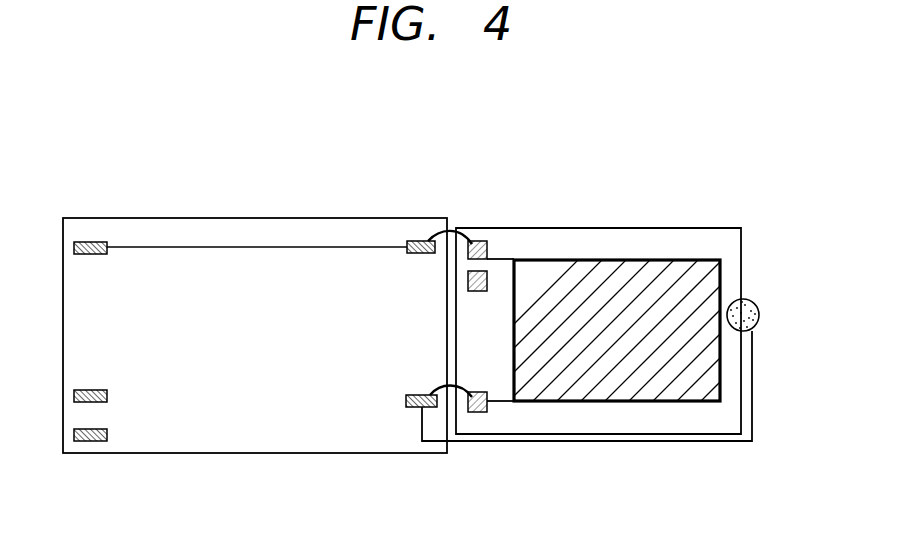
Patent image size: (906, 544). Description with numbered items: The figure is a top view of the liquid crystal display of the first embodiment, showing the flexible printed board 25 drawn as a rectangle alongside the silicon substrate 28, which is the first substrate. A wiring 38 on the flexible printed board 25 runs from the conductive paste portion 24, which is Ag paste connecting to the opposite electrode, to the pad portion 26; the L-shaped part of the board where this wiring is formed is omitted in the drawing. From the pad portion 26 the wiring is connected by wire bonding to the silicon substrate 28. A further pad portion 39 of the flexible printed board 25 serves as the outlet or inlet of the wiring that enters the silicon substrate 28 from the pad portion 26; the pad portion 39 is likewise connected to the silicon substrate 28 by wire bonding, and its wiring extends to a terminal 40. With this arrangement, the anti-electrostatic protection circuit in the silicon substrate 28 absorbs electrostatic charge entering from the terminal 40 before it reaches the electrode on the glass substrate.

The conductive paste portion 24 is at (760, 313).
The flexible printed board 25 is at (258, 217).
The pad portion 26 is at (416, 394).
The silicon substrate 28 is at (620, 227).
The wiring 38 is at (420, 425).
The pad portion 39 is at (418, 240).
The terminal 40 is at (85, 255).